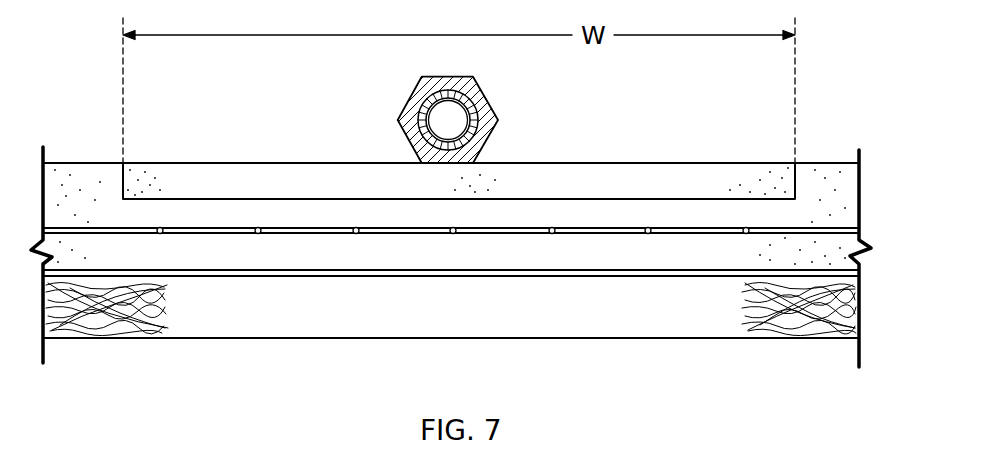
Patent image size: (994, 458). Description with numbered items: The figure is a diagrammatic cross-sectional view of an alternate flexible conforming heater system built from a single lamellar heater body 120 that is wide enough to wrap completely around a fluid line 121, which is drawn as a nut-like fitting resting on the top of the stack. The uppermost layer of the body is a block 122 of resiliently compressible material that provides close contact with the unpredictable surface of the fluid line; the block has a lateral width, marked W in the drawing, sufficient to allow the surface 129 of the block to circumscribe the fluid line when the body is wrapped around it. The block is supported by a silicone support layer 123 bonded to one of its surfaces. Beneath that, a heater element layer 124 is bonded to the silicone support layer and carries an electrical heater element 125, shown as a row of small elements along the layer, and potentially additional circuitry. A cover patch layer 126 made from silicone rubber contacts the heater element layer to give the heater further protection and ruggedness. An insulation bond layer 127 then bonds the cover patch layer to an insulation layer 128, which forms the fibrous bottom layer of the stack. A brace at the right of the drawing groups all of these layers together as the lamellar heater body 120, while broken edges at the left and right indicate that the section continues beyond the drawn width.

The lamellar heater body 120 is at (888, 163).
The fluid line 121 is at (413, 100).
The block 122 is at (608, 175).
The silicone support layer 123 is at (298, 210).
The heater element layer 124 is at (218, 232).
The electrical heater element 125 is at (257, 230).
The cover patch layer 126 is at (543, 253).
The insulation bond layer 127 is at (622, 267).
The insulation layer 128 is at (727, 318).
The surface of the block 129 is at (688, 163).